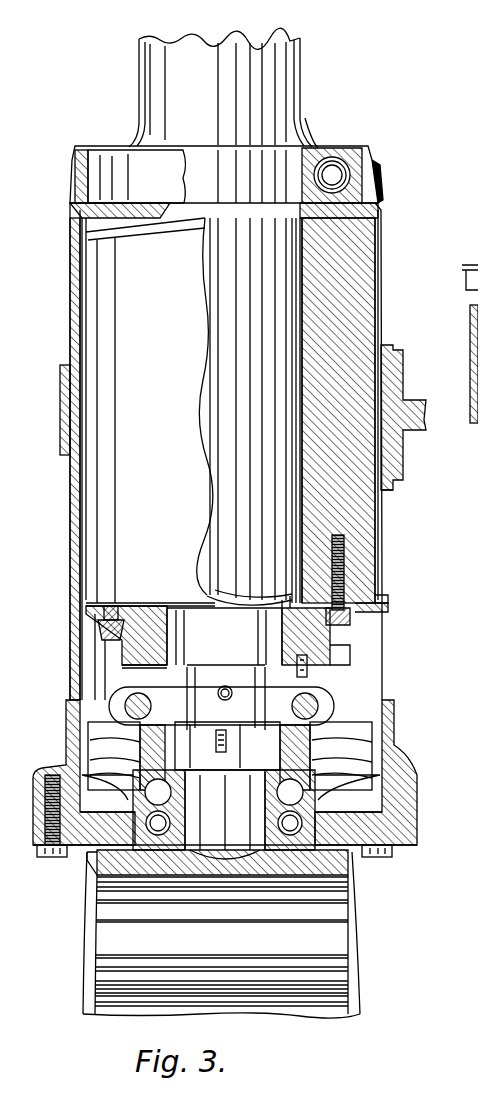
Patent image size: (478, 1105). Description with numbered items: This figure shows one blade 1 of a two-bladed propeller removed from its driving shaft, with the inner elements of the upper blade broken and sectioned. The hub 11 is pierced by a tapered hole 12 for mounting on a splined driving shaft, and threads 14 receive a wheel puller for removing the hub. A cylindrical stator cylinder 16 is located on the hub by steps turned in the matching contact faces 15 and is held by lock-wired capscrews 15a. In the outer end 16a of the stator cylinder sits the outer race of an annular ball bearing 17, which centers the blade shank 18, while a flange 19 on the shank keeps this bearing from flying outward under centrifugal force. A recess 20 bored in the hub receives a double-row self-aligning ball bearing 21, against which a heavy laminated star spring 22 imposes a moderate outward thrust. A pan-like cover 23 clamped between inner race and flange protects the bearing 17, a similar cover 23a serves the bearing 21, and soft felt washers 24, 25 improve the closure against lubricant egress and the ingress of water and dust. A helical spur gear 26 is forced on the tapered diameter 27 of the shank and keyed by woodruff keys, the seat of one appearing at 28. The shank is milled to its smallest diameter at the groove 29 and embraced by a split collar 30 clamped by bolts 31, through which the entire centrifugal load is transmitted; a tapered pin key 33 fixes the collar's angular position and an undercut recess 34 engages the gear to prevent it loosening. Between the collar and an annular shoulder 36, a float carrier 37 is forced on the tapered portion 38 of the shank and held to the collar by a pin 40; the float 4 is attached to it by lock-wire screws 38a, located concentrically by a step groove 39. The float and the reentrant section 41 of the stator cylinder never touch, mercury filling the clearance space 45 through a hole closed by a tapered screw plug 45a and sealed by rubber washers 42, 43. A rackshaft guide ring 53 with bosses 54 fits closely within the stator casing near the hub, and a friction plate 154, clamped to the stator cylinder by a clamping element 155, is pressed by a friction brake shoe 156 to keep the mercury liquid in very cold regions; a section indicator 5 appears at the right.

The propeller blade 1 is at (205, 48).
The float 4 is at (335, 325).
The section line 5 is at (466, 467).
The hub 11 is at (350, 862).
The tapered hole 12 is at (221, 935).
The threads 14 is at (90, 876).
The matching contact faces 15 is at (418, 822).
The special capscrews 15a is at (438, 856).
The stator cylinder 16 is at (383, 250).
The outer end of stator cylinder 16a is at (383, 217).
The annular ball bearing 17 is at (396, 122).
The blade shank 18 is at (189, 412).
The flange 19 is at (308, 132).
The recess 20 is at (258, 870).
The double-row self-aligning annular ball bearing 21 is at (185, 820).
The laminated star spring 22 is at (185, 870).
The pan-like cover 23 is at (337, 152).
The pan-like cover 23a is at (325, 782).
The felt washer 24 is at (382, 190).
The felt washer 25 is at (112, 792).
The helical spur gear 26 is at (295, 734).
The tapered diameter 27 is at (228, 746).
The woodruff key seat 28 is at (208, 740).
The groove 29 is at (208, 686).
The split collar 30 is at (330, 686).
The bolts 31 is at (221, 697).
The tapered pin key 33 is at (228, 690).
The undercut recess 34 is at (158, 724).
The annular shoulder 36 is at (290, 602).
The float carrier 37 is at (126, 662).
The tapered portion 38 is at (178, 618).
The lock-wire screws 38a is at (352, 658).
The step groove 39 is at (370, 575).
The pin 40 is at (308, 664).
The reentrant section 41 is at (296, 265).
The rubber washer 42 is at (388, 612).
The rubber washer 43 is at (306, 636).
The mercury space 45 is at (382, 332).
The tapered screw plug 45a is at (388, 598).
The rackshaft guide ring 53 is at (470, 355).
The bosses 54 is at (230, 756).
The friction plate 154 is at (392, 492).
The clamping element 155 is at (61, 456).
The friction brake shoe 156 is at (410, 461).